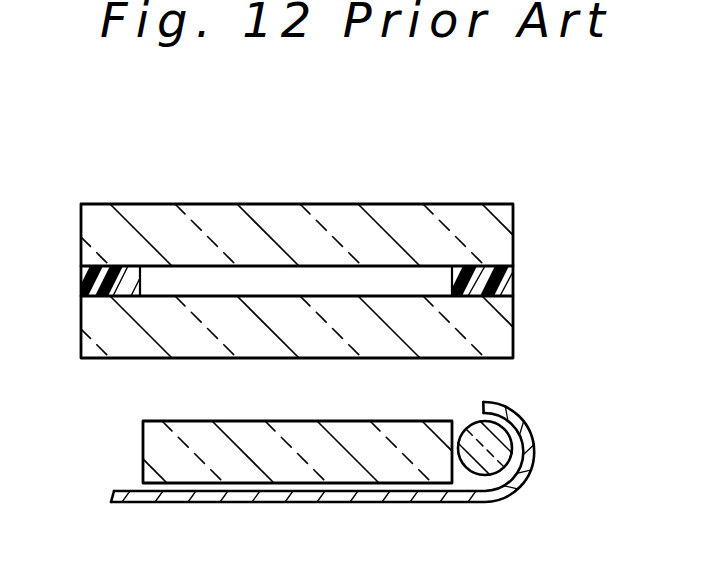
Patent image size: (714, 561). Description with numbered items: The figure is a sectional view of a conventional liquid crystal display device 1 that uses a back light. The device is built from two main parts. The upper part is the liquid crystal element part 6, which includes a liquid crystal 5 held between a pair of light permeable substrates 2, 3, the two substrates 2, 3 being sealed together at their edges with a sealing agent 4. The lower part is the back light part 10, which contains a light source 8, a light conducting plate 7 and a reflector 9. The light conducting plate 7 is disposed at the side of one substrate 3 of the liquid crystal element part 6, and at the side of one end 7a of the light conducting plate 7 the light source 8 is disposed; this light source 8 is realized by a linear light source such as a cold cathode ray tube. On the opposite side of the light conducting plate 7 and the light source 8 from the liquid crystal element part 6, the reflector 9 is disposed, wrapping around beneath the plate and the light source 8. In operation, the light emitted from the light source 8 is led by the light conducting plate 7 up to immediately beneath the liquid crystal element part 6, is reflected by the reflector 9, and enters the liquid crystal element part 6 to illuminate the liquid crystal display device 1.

The liquid crystal display device 1 is at (251, 127).
The light permeable substrate 2 is at (495, 232).
The light permeable substrate 3 is at (500, 334).
The sealing agent 4 is at (505, 277).
The liquid crystal 5 is at (170, 287).
The liquid crystal element part 6 is at (617, 197).
The light conducting plate 7 is at (155, 447).
The one end of the light conducting plate 7a is at (458, 423).
The light source 8 is at (478, 421).
The reflector 9 is at (532, 466).
The back light part 10 is at (617, 353).